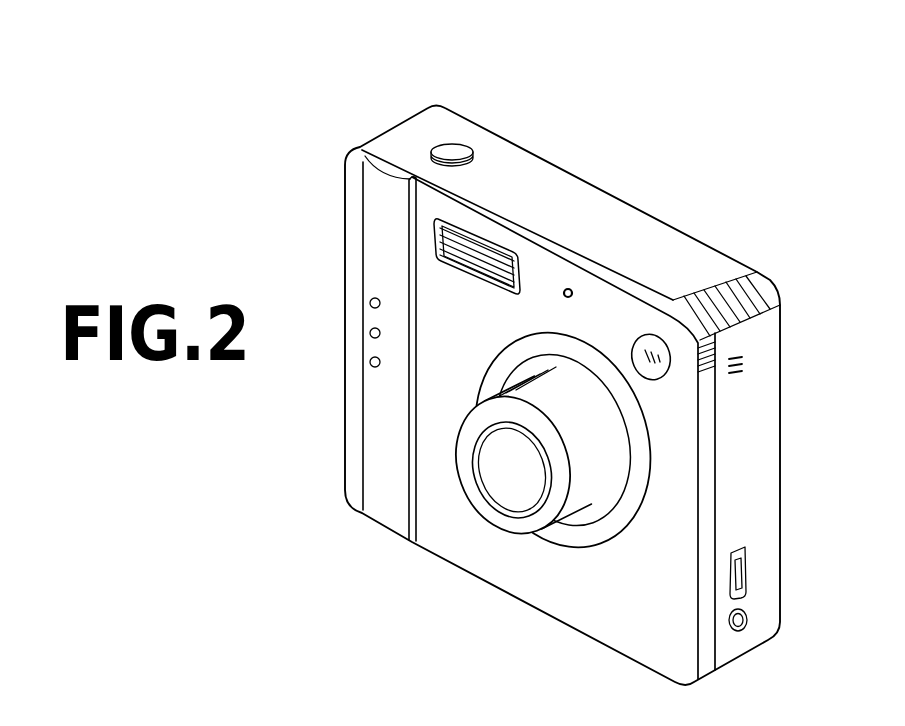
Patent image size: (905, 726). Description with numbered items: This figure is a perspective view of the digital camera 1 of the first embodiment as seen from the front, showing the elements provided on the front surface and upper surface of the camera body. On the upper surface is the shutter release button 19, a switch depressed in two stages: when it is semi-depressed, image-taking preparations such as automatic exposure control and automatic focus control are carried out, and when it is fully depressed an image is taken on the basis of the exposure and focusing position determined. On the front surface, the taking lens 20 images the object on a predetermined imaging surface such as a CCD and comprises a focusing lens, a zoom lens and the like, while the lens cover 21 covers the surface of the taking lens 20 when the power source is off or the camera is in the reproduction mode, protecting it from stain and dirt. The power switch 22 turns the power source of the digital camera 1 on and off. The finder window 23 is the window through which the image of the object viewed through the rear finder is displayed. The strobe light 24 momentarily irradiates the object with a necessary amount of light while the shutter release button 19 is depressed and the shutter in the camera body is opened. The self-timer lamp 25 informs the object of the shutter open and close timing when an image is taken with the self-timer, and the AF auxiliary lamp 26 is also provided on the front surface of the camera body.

The digital camera 1 is at (575, 112).
The shutter release button 19 is at (452, 150).
The taking lens 20 is at (512, 468).
The lens cover 21 is at (533, 510).
The power switch 22 is at (377, 462).
The finder window 23 is at (668, 378).
The strobe light 24 is at (437, 228).
The self-timer lamp 25 is at (372, 328).
The AF auxiliary lamp 26 is at (570, 289).